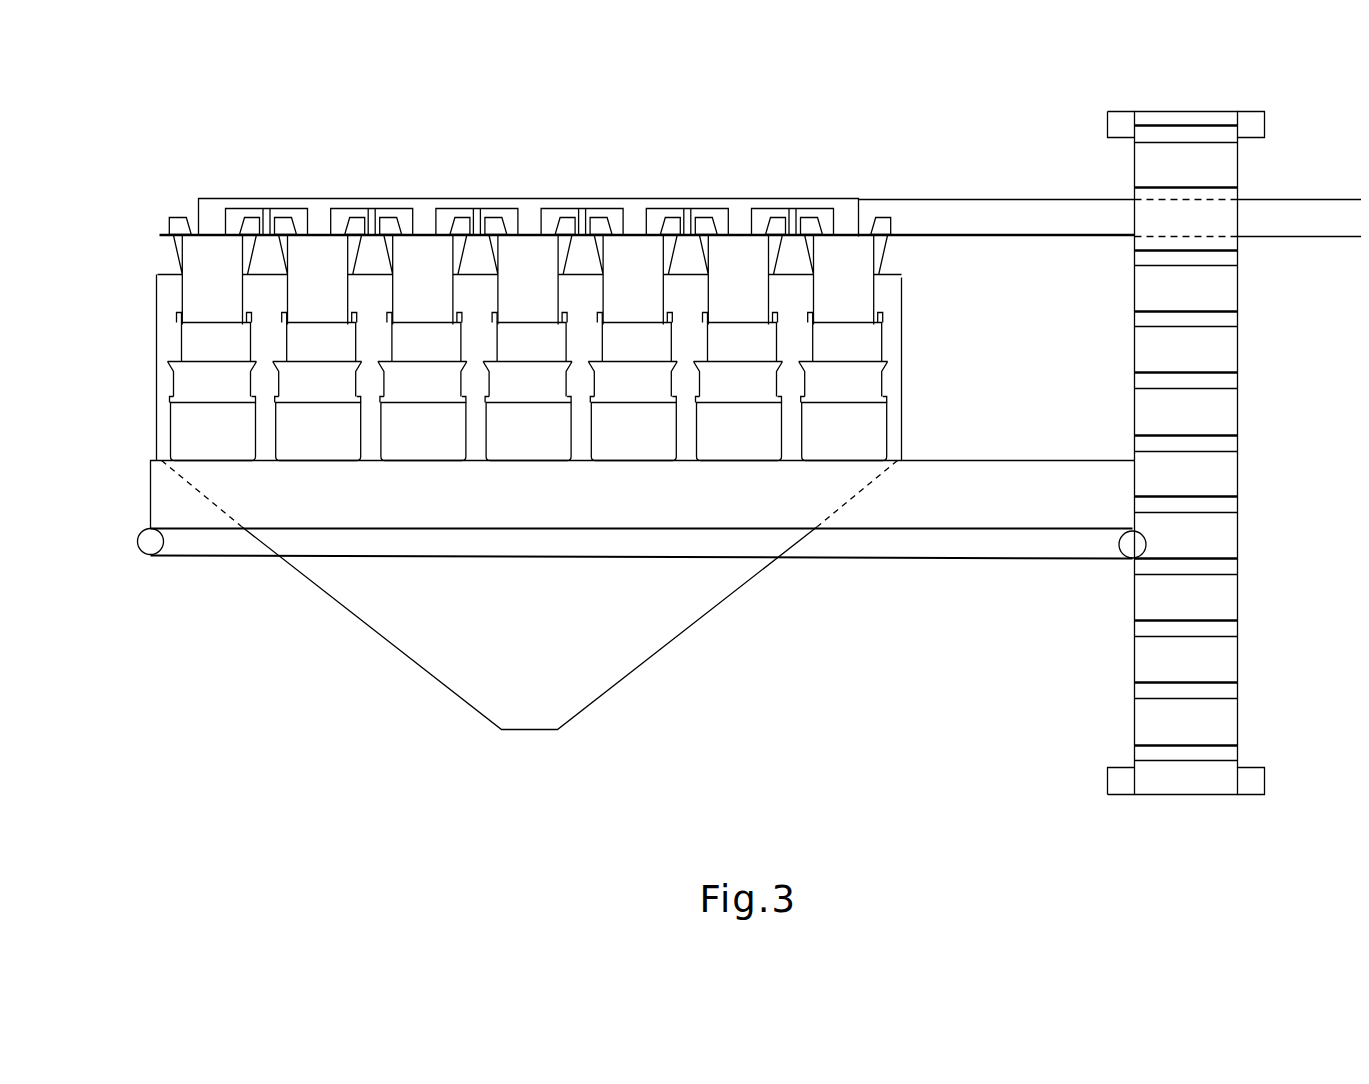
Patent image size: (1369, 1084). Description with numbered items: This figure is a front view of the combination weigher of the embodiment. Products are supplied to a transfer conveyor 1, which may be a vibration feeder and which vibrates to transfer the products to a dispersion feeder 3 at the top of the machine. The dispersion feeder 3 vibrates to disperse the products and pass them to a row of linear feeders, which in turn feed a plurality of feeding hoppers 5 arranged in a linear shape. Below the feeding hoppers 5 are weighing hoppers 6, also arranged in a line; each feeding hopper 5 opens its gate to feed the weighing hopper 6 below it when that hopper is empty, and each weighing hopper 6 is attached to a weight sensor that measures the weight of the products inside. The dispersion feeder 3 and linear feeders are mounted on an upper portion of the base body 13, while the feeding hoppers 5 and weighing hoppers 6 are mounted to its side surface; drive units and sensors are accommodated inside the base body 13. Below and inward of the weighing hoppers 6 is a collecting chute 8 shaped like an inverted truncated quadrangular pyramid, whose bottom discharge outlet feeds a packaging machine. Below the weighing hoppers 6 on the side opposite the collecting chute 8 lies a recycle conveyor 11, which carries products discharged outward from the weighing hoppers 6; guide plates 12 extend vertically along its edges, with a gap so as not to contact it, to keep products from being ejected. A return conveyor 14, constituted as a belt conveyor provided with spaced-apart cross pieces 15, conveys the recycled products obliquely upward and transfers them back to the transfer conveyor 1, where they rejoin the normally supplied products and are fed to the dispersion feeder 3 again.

The transfer conveyor 1 is at (952, 200).
The dispersion feeder 3 is at (478, 198).
The feeding hopper 5 is at (210, 288).
The weighing hopper 6 is at (190, 388).
The collecting chute 8 is at (667, 645).
The recycle conveyor 11 is at (235, 559).
The guide plate 12 is at (151, 501).
The base body 13 is at (903, 340).
The return conveyor 14 is at (1240, 463).
The cross piece 15 is at (1197, 620).